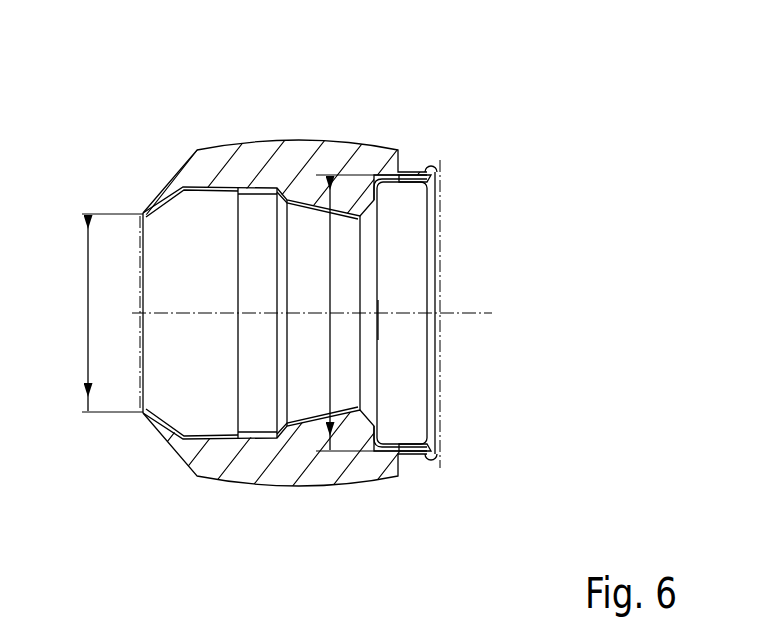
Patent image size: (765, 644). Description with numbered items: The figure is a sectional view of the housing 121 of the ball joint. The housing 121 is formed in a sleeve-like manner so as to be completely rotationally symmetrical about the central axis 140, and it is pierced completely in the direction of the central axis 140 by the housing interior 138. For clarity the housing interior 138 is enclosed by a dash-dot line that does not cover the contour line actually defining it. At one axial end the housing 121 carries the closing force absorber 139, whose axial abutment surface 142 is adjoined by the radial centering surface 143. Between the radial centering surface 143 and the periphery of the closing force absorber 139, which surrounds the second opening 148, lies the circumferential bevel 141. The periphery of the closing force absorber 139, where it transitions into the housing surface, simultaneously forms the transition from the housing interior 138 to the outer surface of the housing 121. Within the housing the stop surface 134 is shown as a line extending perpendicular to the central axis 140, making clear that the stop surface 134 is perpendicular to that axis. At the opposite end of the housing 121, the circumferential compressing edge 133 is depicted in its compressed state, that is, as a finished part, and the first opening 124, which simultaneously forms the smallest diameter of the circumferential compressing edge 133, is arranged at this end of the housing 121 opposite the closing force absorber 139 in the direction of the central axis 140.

The housing 121 is at (313, 127).
The first opening 124 is at (88, 313).
The circumferential compressing edge 133 is at (162, 196).
The stop surface 134 is at (236, 393).
The housing interior 138 is at (437, 448).
The closing force absorber 139 is at (409, 230).
The central axis 140 is at (478, 313).
The circumferential bevel 141 is at (447, 163).
The axial abutment surface 142 is at (378, 334).
The radial centering surface 143 is at (405, 441).
The second opening 148 is at (330, 335).